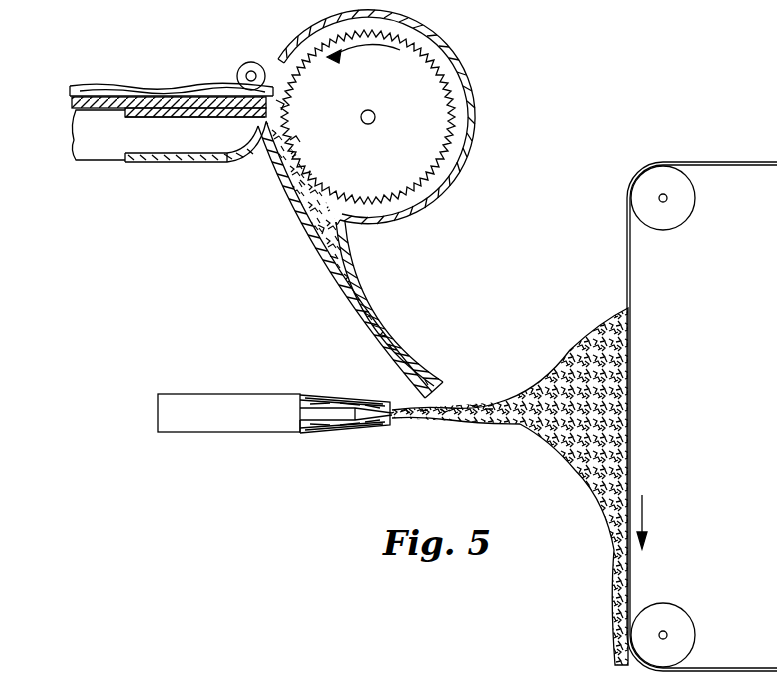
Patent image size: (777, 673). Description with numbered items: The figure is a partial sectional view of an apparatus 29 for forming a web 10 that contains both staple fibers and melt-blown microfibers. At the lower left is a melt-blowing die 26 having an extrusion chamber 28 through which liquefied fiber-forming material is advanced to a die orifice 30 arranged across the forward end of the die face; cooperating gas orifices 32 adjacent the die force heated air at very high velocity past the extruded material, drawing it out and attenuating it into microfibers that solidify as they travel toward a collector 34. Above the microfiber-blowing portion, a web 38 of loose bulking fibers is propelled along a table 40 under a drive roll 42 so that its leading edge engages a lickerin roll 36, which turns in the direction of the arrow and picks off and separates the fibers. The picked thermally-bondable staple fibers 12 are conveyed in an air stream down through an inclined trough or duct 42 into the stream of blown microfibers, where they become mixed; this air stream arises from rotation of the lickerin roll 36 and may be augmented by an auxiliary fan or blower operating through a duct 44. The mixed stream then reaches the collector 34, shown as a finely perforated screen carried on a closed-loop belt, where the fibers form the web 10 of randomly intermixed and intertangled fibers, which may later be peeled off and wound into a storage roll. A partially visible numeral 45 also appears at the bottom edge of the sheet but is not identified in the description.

The apparatus 29 is at (560, 79).
The lickerin roll 36 is at (422, 78).
The table 40 is at (122, 90).
The web of bulking fibers 38 is at (214, 92).
The duct 44 is at (183, 140).
The drive roll / trough or duct 42 is at (253, 62).
The die 26 is at (229, 395).
The extrusion chamber 28 is at (322, 413).
The die orifice 30 is at (392, 417).
The gas orifices 32 is at (372, 434).
The thermally-bondable staple fibers 12 is at (465, 396).
The web 10 is at (614, 606).
The collector 34 is at (632, 300).
The collector 45 is at (455, 671).